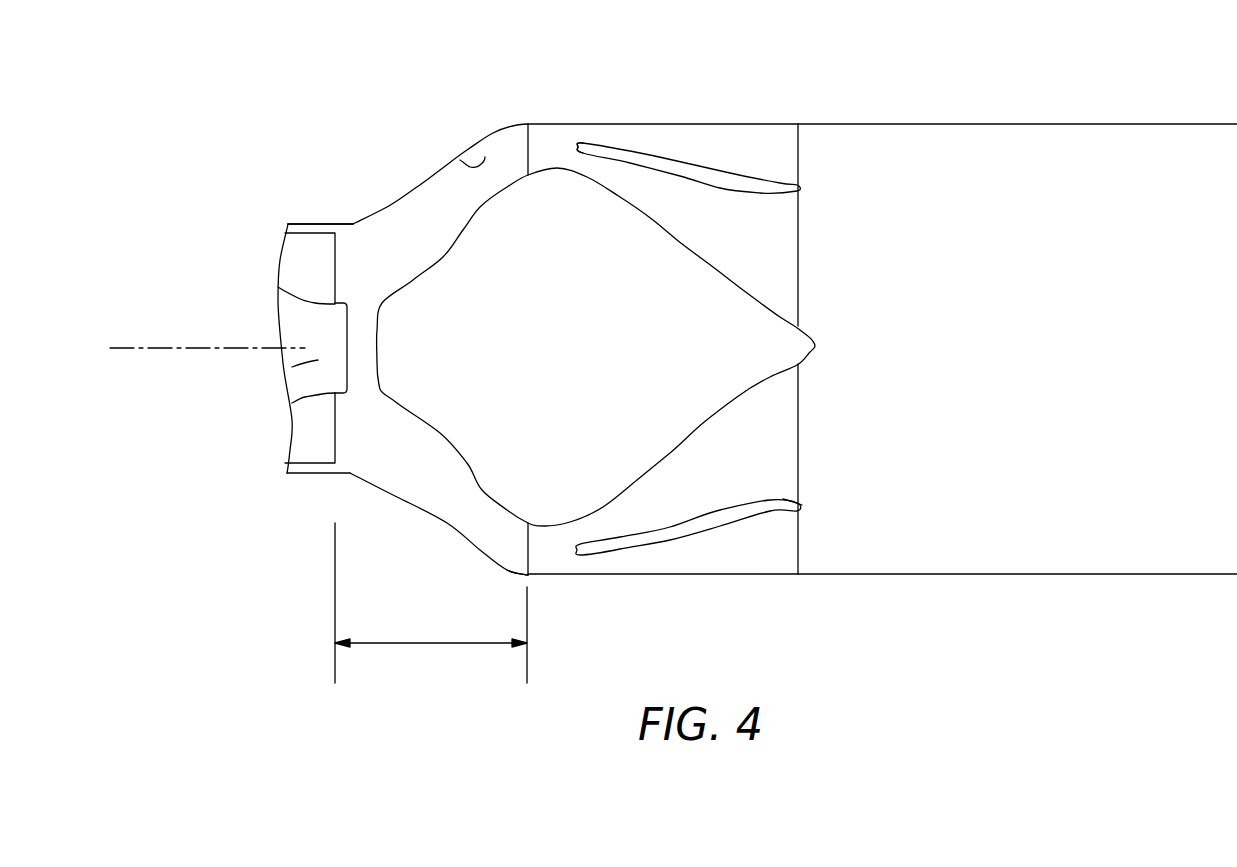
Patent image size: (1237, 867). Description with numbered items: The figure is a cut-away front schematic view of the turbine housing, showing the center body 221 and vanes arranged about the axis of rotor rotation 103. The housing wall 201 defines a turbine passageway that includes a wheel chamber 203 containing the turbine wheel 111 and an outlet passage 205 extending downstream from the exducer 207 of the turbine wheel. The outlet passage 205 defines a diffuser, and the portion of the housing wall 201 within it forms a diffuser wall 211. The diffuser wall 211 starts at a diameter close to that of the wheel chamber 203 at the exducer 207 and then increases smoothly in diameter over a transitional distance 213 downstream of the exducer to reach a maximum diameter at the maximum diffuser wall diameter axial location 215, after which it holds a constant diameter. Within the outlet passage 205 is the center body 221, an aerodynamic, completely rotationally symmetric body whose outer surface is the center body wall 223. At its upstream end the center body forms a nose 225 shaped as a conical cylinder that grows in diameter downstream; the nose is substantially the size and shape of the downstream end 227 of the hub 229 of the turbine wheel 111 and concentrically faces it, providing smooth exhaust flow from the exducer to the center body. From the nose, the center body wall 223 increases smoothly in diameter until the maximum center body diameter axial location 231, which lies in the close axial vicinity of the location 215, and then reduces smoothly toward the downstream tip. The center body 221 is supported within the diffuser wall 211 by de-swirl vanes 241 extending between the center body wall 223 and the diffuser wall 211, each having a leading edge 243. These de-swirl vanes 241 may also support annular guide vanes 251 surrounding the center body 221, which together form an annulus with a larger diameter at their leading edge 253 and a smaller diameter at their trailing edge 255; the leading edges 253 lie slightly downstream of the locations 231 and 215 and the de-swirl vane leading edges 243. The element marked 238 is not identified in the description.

The axis of rotor rotation 103 is at (130, 352).
The turbine wheel 111 is at (335, 328).
The housing wall 201 is at (923, 573).
The wheel chamber 203 is at (315, 223).
The outlet passage 205 is at (882, 160).
The exducer 207 is at (338, 248).
The diffuser wall 211 is at (485, 157).
The transitional distance 213 is at (432, 645).
The maximum diffuser wall diameter axial location 215 is at (527, 577).
The center body 221 is at (576, 314).
The center body wall 223 is at (483, 202).
The nose 225 is at (392, 365).
The downstream end of hub 227 is at (347, 406).
The hub 229 is at (318, 360).
The maximum center body diameter axial location 231 is at (548, 527).
The partition wall 238 is at (807, 355).
The de-swirl vanes 241 is at (738, 543).
The leading edge 243 is at (525, 145).
The annular guide vanes 251 is at (677, 165).
The leading edge 253 is at (578, 147).
The trailing edge 255 is at (798, 507).